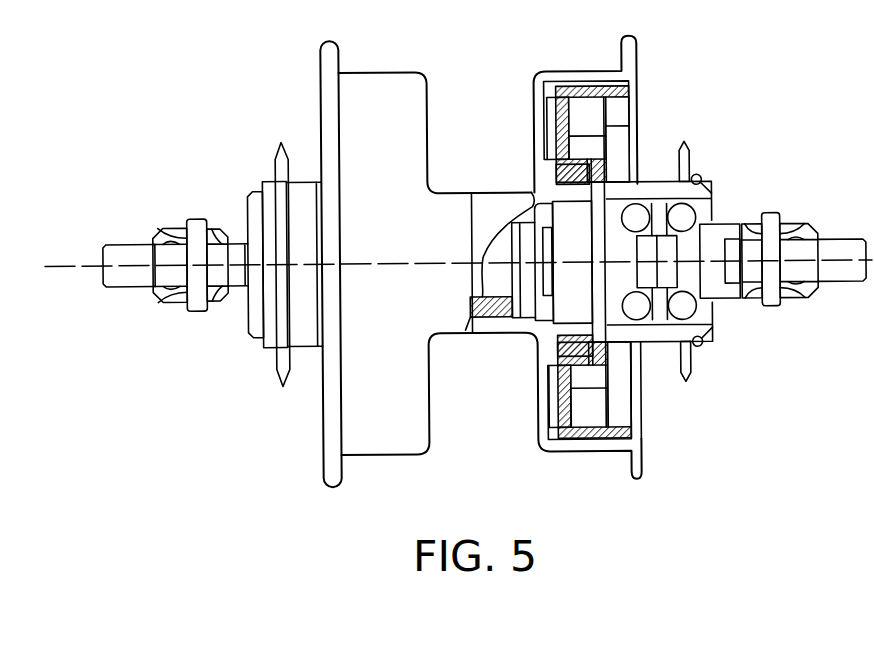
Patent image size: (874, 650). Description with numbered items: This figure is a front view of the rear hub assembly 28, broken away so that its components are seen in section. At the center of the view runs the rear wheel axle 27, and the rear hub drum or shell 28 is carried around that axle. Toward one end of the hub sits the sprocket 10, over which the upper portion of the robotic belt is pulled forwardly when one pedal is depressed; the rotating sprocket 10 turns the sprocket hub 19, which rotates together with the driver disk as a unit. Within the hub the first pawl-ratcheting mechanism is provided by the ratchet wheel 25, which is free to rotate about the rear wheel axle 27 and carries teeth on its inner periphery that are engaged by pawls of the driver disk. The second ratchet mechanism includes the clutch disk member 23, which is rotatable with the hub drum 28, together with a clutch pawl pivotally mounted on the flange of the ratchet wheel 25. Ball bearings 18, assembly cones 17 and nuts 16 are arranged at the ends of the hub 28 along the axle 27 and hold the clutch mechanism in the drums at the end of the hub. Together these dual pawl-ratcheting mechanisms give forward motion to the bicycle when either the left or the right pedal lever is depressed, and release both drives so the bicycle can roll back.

The sprocket 10 is at (287, 378).
The nuts 16 is at (175, 237).
The assembly cones 17 is at (240, 290).
The ball bearings 18 is at (641, 308).
The sprocket hub 19 is at (258, 338).
The clutch disk member 23 is at (593, 164).
The ratchet wheel 25 is at (567, 112).
The rear wheel axle 27 is at (131, 254).
The rear hub assembly 28 is at (383, 85).